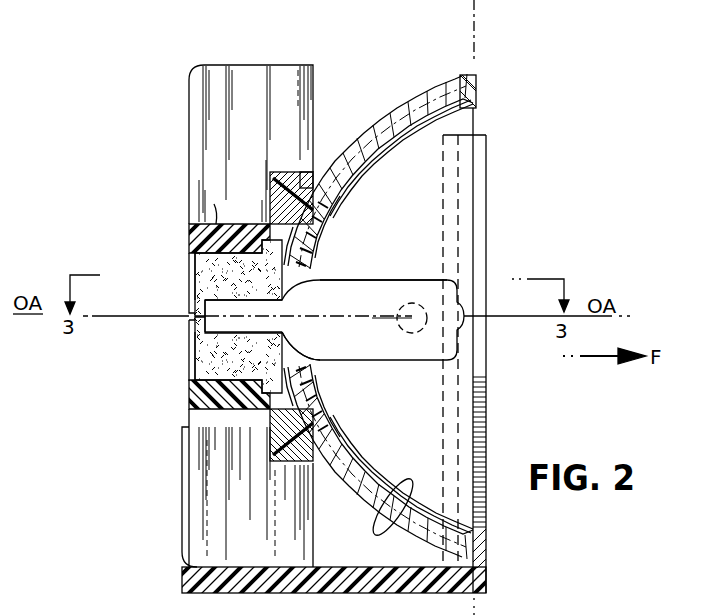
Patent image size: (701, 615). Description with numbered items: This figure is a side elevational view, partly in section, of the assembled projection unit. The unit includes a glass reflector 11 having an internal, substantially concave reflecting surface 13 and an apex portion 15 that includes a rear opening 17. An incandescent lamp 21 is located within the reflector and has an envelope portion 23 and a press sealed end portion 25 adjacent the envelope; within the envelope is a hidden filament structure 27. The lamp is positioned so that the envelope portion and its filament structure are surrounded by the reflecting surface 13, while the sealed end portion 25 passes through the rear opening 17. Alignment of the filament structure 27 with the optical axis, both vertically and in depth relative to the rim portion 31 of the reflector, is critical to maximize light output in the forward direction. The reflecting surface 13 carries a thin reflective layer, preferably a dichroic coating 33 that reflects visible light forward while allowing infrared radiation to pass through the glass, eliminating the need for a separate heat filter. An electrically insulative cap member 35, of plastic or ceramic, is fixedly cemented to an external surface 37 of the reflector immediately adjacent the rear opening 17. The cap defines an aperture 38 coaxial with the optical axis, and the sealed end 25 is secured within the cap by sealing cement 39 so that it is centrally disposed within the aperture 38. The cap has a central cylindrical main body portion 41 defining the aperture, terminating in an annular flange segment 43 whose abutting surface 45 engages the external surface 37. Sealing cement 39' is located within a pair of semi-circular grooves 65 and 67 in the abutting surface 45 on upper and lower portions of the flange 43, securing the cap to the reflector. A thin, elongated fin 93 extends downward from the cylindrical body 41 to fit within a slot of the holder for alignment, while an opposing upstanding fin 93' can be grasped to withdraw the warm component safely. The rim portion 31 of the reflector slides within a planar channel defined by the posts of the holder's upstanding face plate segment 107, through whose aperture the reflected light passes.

The glass reflector 11 is at (466, 70).
The reflecting surface 13 is at (372, 140).
The apex portion 15 is at (277, 211).
The rear opening 17 is at (302, 360).
The incandescent lamp 21 is at (424, 266).
The envelope portion 23 is at (378, 280).
The press sealed end portion 25 is at (215, 282).
The filament structure 27 is at (399, 334).
The rim portion 31 is at (478, 98).
The dichroic coating 33 is at (392, 155).
The insulative cap member 35 is at (182, 243).
The external surface 37 is at (298, 177).
The aperture 38 is at (178, 298).
The sealing cement 39 is at (207, 355).
The sealing cement 39' is at (317, 325).
The cylindrical main body portion 41 is at (212, 223).
The annular flange segment 43 is at (306, 178).
The abutting surface 45 is at (322, 203).
The semi-circular groove 65 is at (332, 212).
The semi-circular groove 67 is at (312, 437).
The fin 93 is at (216, 488).
The second fin 93' is at (223, 144).
The face plate segment 107 is at (494, 409).